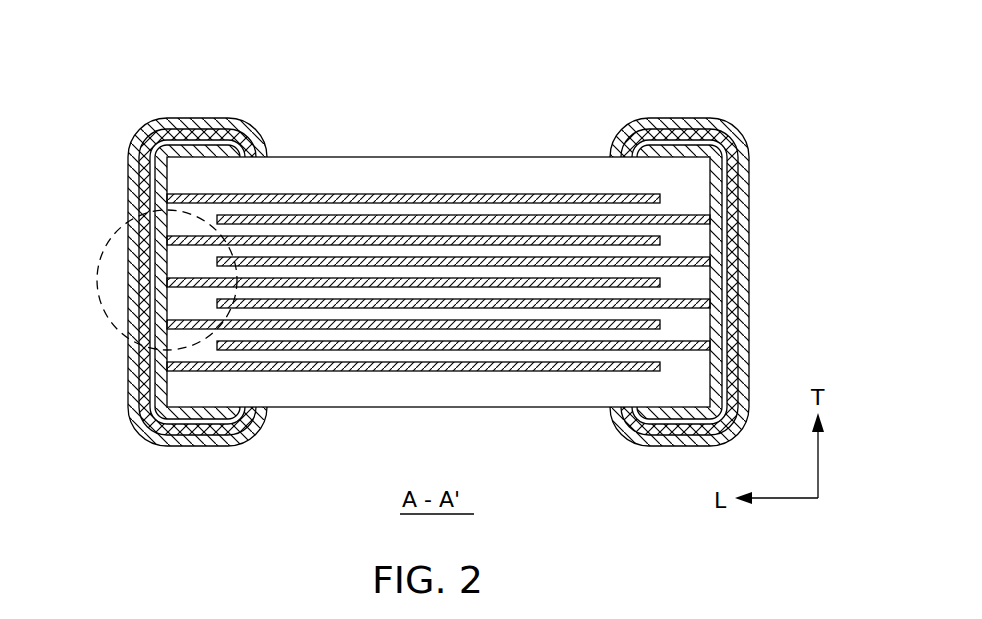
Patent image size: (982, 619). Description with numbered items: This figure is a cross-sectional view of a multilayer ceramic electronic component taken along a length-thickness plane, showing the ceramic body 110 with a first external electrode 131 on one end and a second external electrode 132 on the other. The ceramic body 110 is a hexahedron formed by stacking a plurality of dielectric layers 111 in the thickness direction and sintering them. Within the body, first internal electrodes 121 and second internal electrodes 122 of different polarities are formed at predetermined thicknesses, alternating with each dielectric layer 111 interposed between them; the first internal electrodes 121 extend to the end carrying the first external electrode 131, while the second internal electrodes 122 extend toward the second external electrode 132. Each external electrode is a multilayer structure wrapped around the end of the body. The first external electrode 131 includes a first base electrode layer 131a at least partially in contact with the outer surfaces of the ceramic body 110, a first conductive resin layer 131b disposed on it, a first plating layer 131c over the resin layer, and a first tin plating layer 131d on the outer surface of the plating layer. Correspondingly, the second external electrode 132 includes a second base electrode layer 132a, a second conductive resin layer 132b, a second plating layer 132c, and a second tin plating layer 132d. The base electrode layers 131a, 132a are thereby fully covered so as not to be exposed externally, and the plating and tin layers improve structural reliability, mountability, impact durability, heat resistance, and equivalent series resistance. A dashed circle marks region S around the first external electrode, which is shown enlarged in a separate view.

The ceramic body 110 is at (494, 157).
The dielectric layer 111 is at (394, 207).
The first internal electrode 121 is at (344, 196).
The second internal electrode 122 is at (455, 216).
The first external electrode 131 is at (190, 229).
The first base electrode layer 131a is at (239, 238).
The first conductive resin layer 131b is at (222, 142).
The first plating layer 131c is at (158, 133).
The first tin plating layer 131d is at (131, 165).
The second external electrode 132 is at (689, 228).
The second base electrode layer 132a is at (638, 238).
The second conductive resin layer 132b is at (652, 142).
The second plating layer 132c is at (717, 134).
The second tin plating layer 132d is at (746, 165).
The region S is at (97, 282).